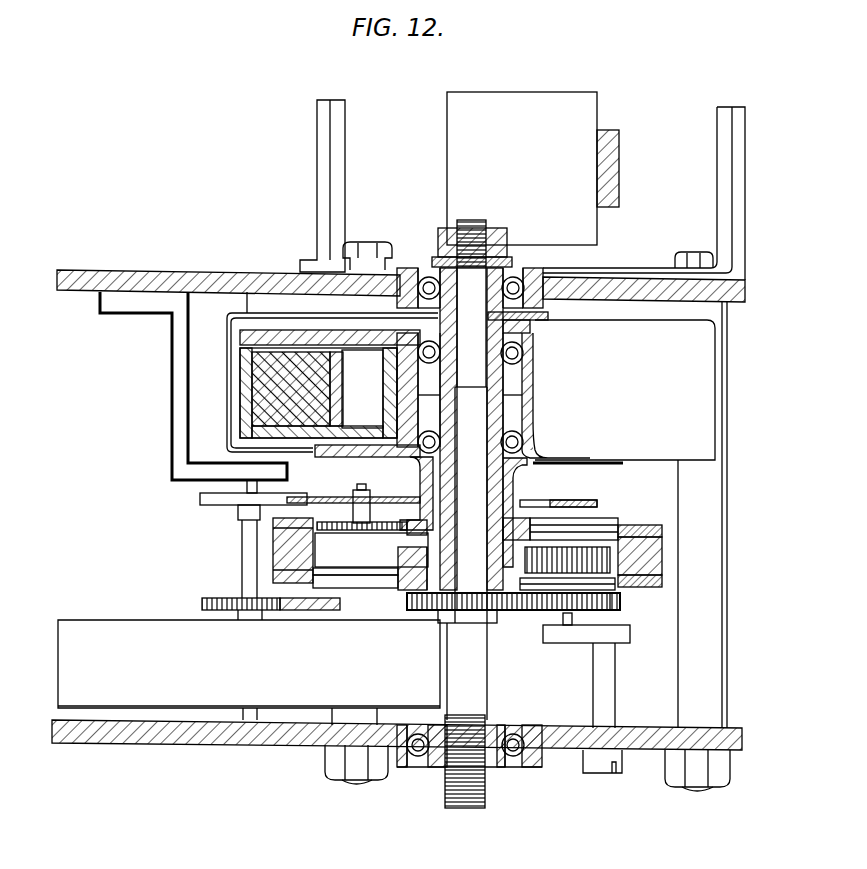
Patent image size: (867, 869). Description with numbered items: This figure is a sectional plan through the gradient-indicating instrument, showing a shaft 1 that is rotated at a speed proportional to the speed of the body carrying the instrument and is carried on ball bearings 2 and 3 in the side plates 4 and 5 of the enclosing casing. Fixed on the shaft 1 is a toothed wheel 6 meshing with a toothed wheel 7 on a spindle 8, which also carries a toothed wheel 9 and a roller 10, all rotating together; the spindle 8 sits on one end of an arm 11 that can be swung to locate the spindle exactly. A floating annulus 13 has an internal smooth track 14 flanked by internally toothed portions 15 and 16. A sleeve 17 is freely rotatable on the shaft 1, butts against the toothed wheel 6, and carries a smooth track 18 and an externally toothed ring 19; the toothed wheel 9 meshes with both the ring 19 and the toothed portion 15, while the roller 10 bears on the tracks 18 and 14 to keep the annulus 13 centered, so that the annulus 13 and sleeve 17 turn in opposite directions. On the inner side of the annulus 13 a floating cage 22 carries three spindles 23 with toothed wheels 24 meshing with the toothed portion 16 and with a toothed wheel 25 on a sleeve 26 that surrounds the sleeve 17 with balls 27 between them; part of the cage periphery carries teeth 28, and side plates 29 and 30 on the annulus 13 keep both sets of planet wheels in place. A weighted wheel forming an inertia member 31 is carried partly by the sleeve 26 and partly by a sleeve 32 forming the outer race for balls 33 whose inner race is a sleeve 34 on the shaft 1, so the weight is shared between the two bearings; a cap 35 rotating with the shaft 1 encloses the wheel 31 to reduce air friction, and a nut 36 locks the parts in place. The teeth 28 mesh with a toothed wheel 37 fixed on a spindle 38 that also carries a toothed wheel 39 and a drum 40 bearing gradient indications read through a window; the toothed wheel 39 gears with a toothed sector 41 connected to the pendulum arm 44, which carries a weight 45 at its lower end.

The shaft 1 is at (467, 685).
The ball bearing 2 is at (513, 757).
The ball bearing 3 is at (425, 277).
The side plate 4 is at (158, 742).
The side plate 5 is at (210, 272).
The toothed wheel 6 is at (497, 614).
The toothed wheel 7 is at (617, 612).
The spindle 8 is at (565, 624).
The toothed wheel 9 is at (620, 590).
The roller 10 is at (610, 557).
The arm 11 is at (575, 643).
The floating annulus 13 is at (275, 560).
The smooth track 14 is at (348, 572).
The internally toothed portion 15 is at (325, 588).
The internally toothed portion 16 is at (245, 514).
The sleeve 17 is at (515, 480).
The smooth track 18 is at (392, 567).
The externally toothed ring 19 is at (400, 567).
The floating cage 22 is at (575, 503).
The spindle 23 is at (335, 497).
The toothed wheel 24 is at (372, 520).
The toothed wheel 25 is at (535, 530).
The sleeve 26 is at (422, 481).
The balls 27 is at (530, 435).
The teeth 28 is at (265, 493).
The side plate 29 is at (625, 590).
The side plate 30 is at (660, 522).
The inertia member 31 is at (240, 378).
The sleeve 32 is at (390, 365).
The balls 33 is at (526, 354).
The sleeve 34 is at (530, 330).
The cap 35 is at (625, 390).
The nut 36 is at (505, 232).
The toothed wheel 37 is at (205, 498).
The spindle 38 is at (250, 546).
The toothed wheel 39 is at (202, 603).
The drum 40 is at (88, 645).
The toothed sector 41 is at (292, 611).
The pendulum arm 44 is at (620, 150).
The weight 45 is at (557, 110).